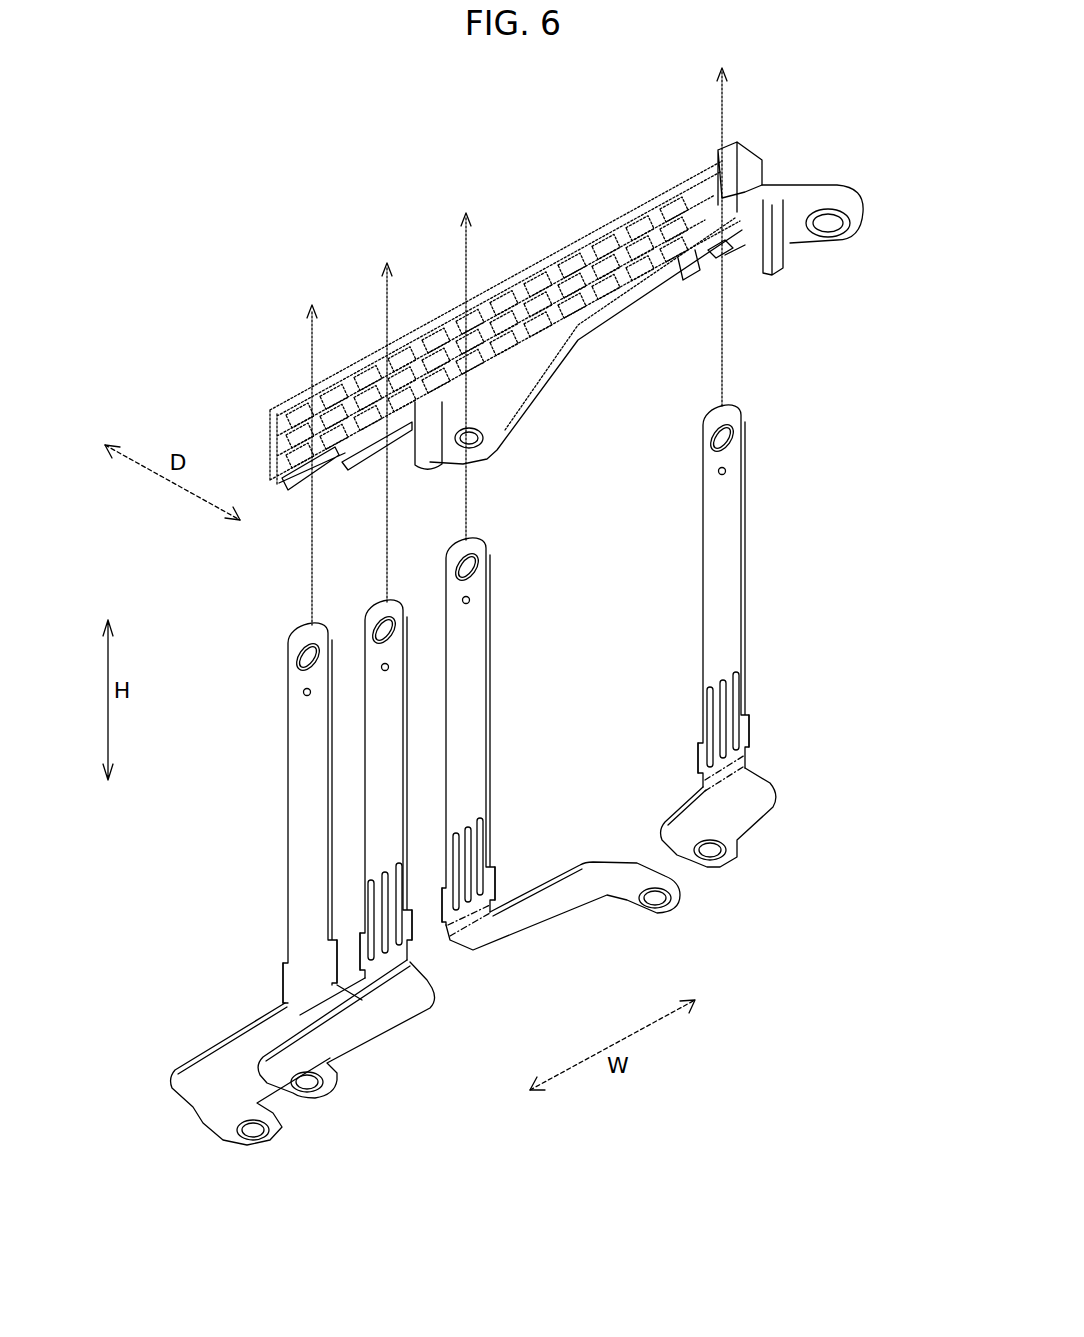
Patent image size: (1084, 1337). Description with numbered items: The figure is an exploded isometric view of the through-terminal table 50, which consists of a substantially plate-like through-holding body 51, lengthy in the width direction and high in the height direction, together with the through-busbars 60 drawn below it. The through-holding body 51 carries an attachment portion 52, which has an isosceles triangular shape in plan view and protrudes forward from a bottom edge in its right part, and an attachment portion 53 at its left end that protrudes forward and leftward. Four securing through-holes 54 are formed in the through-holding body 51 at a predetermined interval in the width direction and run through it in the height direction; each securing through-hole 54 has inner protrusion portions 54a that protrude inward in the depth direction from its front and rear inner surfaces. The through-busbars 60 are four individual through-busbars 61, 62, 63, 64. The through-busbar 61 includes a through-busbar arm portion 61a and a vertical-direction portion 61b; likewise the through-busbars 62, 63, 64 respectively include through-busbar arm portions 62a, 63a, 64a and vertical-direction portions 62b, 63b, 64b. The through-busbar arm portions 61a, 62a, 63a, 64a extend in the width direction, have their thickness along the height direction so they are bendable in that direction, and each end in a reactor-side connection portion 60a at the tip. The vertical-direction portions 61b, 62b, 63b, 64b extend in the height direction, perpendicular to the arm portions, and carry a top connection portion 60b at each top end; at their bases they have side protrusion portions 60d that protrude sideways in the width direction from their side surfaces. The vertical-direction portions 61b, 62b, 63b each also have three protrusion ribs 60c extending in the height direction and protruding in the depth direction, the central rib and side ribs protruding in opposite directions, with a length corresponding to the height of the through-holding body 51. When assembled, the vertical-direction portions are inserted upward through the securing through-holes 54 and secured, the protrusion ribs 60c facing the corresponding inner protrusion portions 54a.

The through-terminal table 50 is at (199, 328).
The through-holding body 51 is at (768, 165).
The attachment portion 52 is at (555, 380).
The attachment portion 53 is at (848, 188).
The securing through-hole 54 is at (690, 262).
The inner protrusion portion 54a is at (723, 238).
The through-busbars 60 is at (499, 766).
The reactor-side connection portion 60a is at (715, 858).
The top connection portion 60b is at (742, 410).
The protrusion rib 60c is at (740, 686).
The side protrusion portion 60d is at (752, 730).
The through-busbar 61 is at (771, 621).
The through-busbar arm portion 61a is at (747, 815).
The vertical-direction portion 61b is at (745, 558).
The through-busbar 62 is at (505, 718).
The through-busbar arm portion 62a is at (552, 913).
The vertical-direction portion 62b is at (475, 662).
The through-busbar 63 is at (424, 778).
The through-busbar arm portion 63a is at (367, 1033).
The vertical-direction portion 63b is at (378, 725).
The through-busbar 64 is at (274, 826).
The through-busbar arm portion 64a is at (205, 1052).
The vertical-direction portion 64b is at (302, 774).